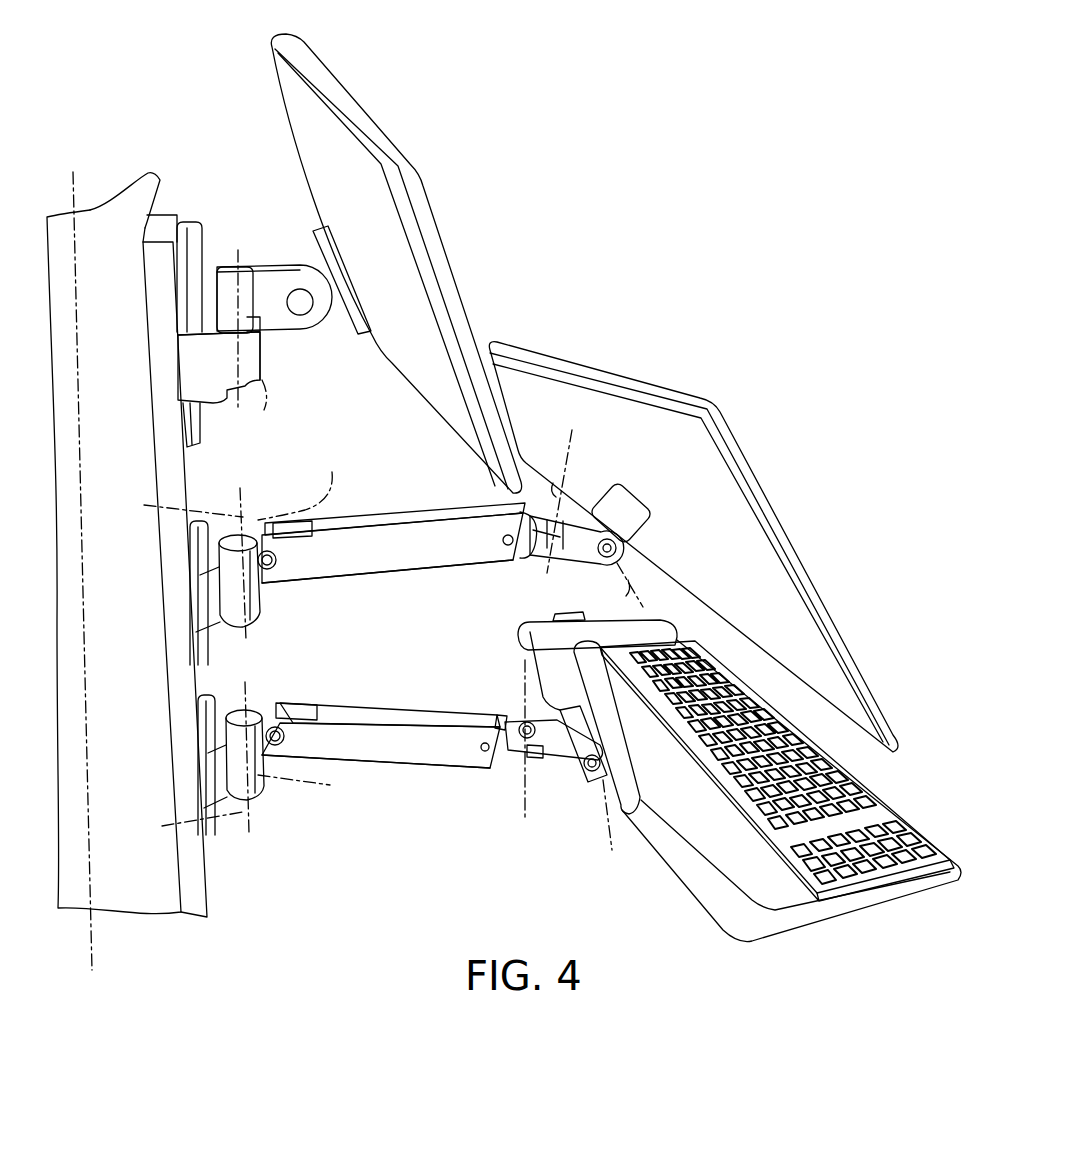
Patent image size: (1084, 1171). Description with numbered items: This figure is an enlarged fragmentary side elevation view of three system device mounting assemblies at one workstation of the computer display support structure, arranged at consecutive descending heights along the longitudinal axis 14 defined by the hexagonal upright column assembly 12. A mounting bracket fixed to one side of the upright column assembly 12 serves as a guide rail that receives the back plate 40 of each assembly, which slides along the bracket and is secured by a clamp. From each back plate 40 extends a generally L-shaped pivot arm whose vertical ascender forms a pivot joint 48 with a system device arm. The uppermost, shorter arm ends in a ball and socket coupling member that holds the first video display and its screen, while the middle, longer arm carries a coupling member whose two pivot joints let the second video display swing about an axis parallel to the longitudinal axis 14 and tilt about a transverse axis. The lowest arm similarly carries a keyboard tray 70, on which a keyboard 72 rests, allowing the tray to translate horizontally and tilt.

The upright column assembly 12 is at (118, 375).
The longitudinal axis 14 is at (77, 313).
The back plate 40 is at (197, 250).
The pivot joint 48 is at (227, 328).
The keyboard tray 70 is at (555, 632).
The keyboard 72 is at (860, 797).